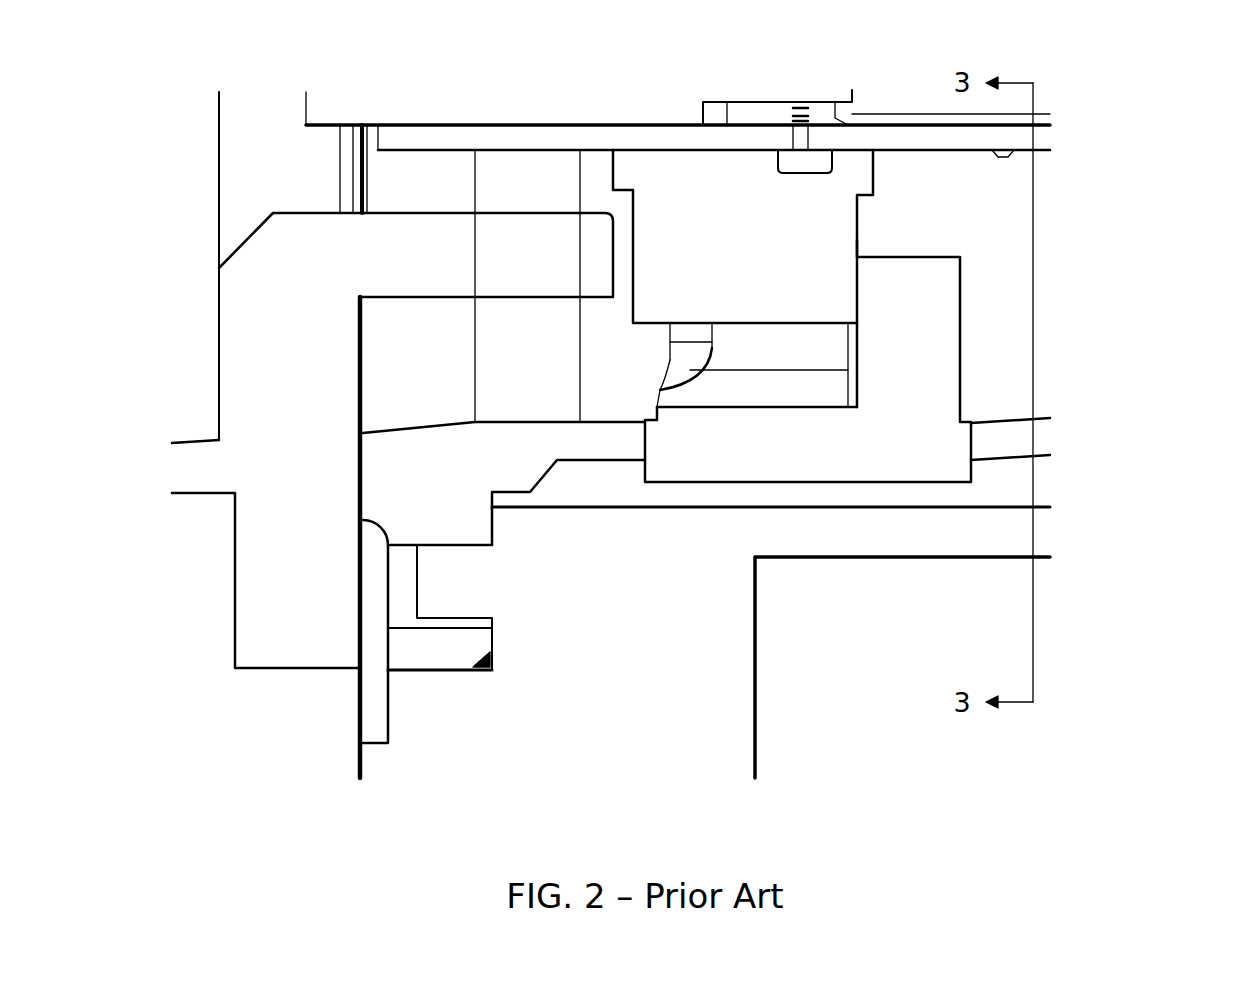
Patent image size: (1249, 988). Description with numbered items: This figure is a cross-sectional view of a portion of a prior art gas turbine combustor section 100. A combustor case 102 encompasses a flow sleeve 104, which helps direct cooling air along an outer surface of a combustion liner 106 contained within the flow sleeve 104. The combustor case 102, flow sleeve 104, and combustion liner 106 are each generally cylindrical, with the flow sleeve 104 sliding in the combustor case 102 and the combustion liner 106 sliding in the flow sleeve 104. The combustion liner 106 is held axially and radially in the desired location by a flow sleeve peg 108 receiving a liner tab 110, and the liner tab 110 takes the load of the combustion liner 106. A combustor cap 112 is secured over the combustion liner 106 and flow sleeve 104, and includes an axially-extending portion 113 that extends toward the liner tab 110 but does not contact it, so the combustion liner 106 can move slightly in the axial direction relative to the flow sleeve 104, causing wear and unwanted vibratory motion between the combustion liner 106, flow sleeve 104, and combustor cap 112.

The combustor section 100 is at (1162, 232).
The combustor case 102 is at (832, 533).
The flow sleeve 104 is at (450, 485).
The combustion liner 106 is at (657, 138).
The flow sleeve peg 108 is at (847, 361).
The liner tab 110 is at (743, 278).
The combustor cap 112 is at (266, 380).
The axially-extending portion 113 is at (416, 255).